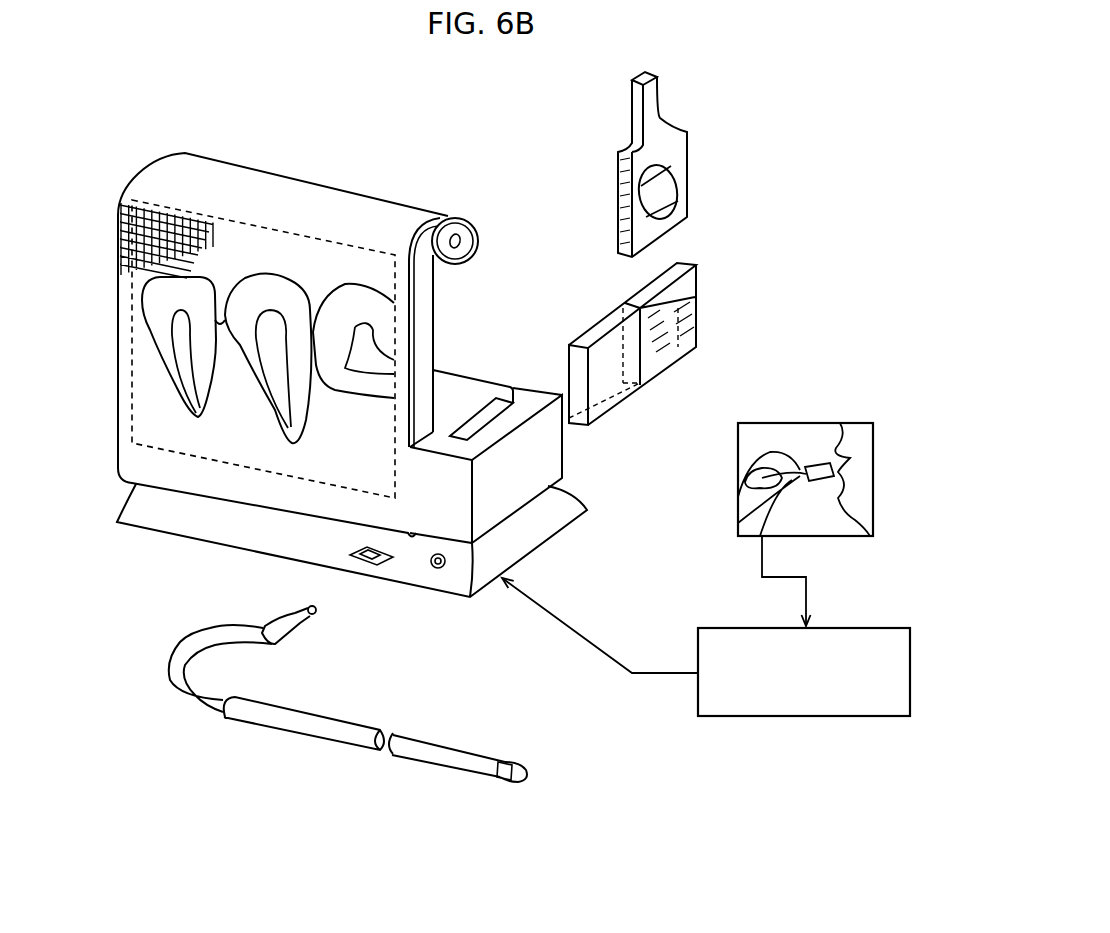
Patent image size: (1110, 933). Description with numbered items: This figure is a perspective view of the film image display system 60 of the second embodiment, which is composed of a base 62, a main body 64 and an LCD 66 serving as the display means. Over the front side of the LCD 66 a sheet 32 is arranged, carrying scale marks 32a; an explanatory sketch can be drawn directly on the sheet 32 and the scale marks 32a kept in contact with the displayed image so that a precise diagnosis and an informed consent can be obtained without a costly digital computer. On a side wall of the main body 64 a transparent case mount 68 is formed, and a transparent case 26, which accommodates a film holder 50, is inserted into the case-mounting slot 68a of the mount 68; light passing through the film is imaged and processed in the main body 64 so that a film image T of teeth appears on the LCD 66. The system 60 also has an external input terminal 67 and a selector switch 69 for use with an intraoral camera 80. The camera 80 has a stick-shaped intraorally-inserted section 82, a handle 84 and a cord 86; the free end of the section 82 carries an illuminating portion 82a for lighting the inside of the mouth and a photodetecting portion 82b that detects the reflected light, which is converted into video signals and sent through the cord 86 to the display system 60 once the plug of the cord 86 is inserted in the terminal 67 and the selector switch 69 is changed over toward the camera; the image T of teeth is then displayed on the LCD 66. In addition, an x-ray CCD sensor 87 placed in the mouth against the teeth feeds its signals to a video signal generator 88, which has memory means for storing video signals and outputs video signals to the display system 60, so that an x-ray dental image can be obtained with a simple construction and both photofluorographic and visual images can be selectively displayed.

The film image display system 60 is at (468, 125).
The sheet 32 is at (166, 176).
The scale marks 32a is at (122, 262).
The image of teeth T is at (258, 278).
The LCD 66 is at (428, 312).
The main body 64 is at (468, 392).
The case-mounting slot 68a is at (505, 390).
The transparent case mount 68 is at (510, 482).
The base 62 is at (294, 540).
The selector switch 69 is at (353, 557).
The external input terminal 67 is at (432, 566).
The film holder 50 is at (692, 100).
The transparent case 26 is at (705, 278).
The x-ray CCD sensor 87 is at (812, 464).
The video signal generator 88 is at (804, 718).
The intraoral camera 80 is at (398, 680).
The cord 86 is at (179, 689).
The handle 84 is at (276, 723).
The intraorally-inserted section 82 is at (441, 752).
The illuminating portion 82a is at (502, 760).
The photodetecting portion 82b is at (522, 765).